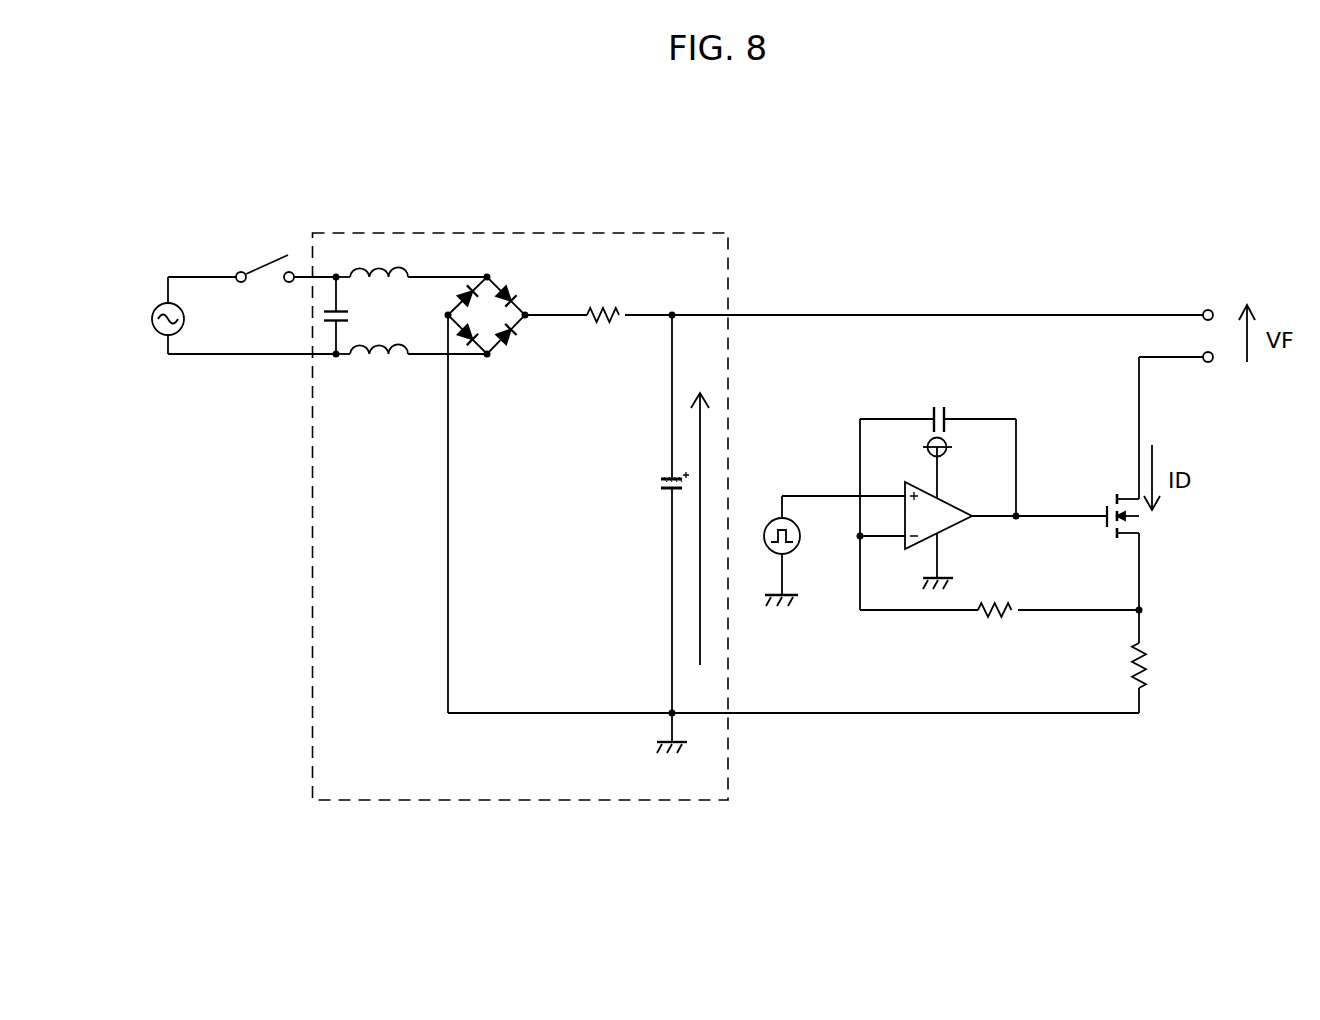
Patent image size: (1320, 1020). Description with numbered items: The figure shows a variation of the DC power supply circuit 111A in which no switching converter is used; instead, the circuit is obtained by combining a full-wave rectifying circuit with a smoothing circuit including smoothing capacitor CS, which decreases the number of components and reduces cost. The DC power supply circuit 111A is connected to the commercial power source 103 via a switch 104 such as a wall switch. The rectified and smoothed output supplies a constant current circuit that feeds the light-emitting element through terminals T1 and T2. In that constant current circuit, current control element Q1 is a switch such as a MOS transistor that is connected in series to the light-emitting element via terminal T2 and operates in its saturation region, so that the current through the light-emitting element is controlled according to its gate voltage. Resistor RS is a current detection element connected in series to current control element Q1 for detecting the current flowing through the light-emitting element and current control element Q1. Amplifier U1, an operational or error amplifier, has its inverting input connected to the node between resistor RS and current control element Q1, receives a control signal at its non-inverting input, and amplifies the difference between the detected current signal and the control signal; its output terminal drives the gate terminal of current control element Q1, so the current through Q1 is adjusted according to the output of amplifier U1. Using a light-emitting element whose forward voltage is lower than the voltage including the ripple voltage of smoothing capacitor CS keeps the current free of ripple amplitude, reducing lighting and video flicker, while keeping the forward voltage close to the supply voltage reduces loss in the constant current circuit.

The commercial power source 103 is at (155, 306).
The switch 104 is at (263, 262).
The DC power supply circuit 111A is at (500, 233).
The smoothing capacitor CS is at (652, 514).
The amplifier U1 is at (998, 512).
The current control element Q1 is at (1146, 483).
The resistor RS is at (1160, 661).
The terminal T1 is at (1206, 301).
The terminal T2 is at (1179, 376).